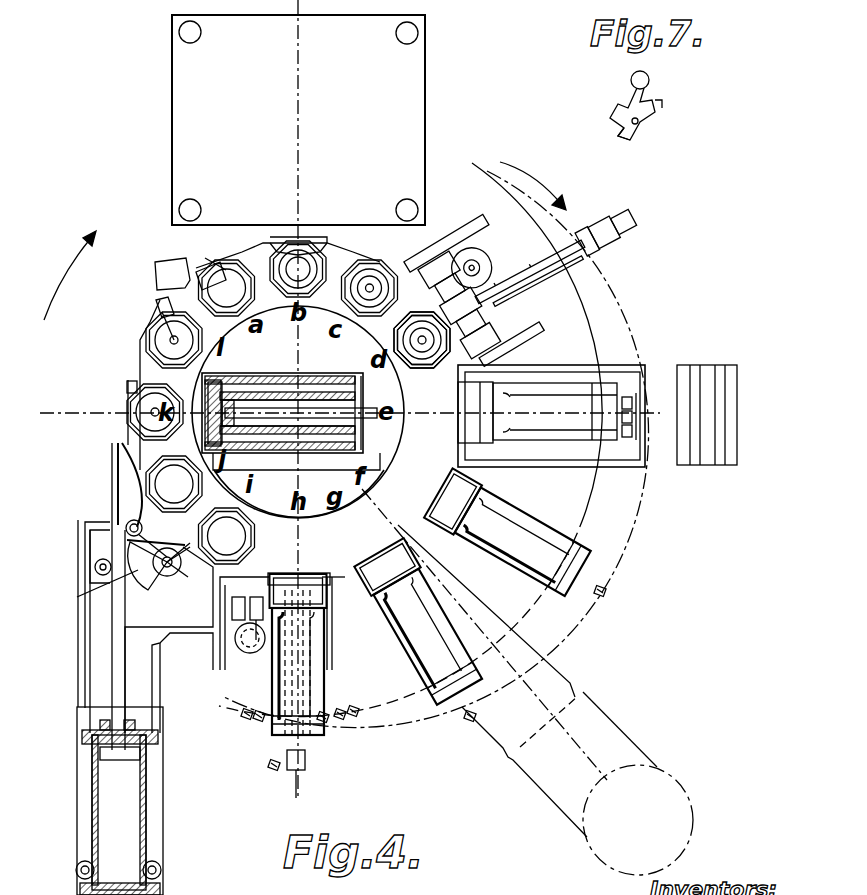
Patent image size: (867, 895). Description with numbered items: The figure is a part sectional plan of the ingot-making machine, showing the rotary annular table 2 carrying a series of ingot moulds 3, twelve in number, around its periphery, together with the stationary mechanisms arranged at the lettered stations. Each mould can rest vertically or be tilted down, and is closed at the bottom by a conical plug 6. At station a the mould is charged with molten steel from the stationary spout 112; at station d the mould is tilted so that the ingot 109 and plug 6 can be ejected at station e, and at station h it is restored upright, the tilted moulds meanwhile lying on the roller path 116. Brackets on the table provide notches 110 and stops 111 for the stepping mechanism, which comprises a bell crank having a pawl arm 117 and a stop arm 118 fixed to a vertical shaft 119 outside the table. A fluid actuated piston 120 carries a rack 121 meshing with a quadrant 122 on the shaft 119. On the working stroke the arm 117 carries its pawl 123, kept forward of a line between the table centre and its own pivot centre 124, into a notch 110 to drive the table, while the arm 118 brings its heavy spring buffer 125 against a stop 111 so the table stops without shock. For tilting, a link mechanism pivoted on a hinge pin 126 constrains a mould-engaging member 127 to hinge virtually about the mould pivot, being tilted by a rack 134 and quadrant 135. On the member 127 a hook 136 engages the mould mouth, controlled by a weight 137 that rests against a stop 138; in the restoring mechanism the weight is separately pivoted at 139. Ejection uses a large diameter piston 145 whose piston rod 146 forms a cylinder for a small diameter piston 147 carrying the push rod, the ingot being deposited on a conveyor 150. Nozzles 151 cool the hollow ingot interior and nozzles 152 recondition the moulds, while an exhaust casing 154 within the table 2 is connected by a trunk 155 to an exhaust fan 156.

In FIG. 4, the rotary annular table 2 is at (508, 533).
In FIG. 4, the ingot mould 3 is at (130, 386).
In FIG. 4, the conical plug 6 is at (655, 416).
In FIG. 4, the ingot 109 is at (300, 262).
In FIG. 4, the notch 110 is at (286, 246).
In FIG. 4, the stop 111 is at (325, 248).
In FIG. 4, the stationary spout 112 is at (182, 275).
In FIG. 4, the roller path 116 is at (348, 716).
In FIG. 4, the bell crank arm 117 is at (130, 550).
In FIG. 4, the stop arm 118 is at (130, 542).
In FIG. 4, the vertical shaft 119 is at (160, 578).
In FIG. 4, the fluid actuated piston 120 is at (122, 755).
In FIG. 4, the rack 121 is at (120, 680).
In FIG. 4, the quadrant 122 is at (100, 587).
In FIG. 4, the pawl 123 is at (116, 463).
In FIG. 4, the pivot centre 124 is at (130, 525).
In FIG. 4, the spring buffer 125 is at (172, 570).
In FIG. 4, the hinge pin 126 is at (540, 312).
In FIG. 4, the mould-engaging member 127 is at (562, 272).
In FIG. 7, the mould-engaging member 127 is at (612, 116).
In FIG. 4, the rack 134 is at (250, 652).
In FIG. 4, the quadrant 135 is at (250, 660).
In FIG. 4, the hook 136 is at (602, 256).
In FIG. 7, the hook 136 is at (628, 106).
In FIG. 4, the weight 137 is at (618, 243).
In FIG. 7, the weight 137 is at (647, 78).
In FIG. 4, the stop 138 is at (625, 228).
In FIG. 7, the stop 138 is at (664, 99).
In FIG. 7, the weight pivot 139 is at (652, 132).
In FIG. 4, the large diameter piston 145 is at (140, 362).
In FIG. 4, the piston rod 146 is at (325, 362).
In FIG. 4, the small diameter piston 147 is at (238, 390).
In FIG. 4, the conveyor 150 is at (722, 464).
In FIG. 4, the nozzle 151 is at (372, 292).
In FIG. 4, the nozzle 152 is at (160, 312).
In FIG. 4, the exhaust casing 154 is at (340, 495).
In FIG. 4, the trunk 155 is at (568, 672).
In FIG. 4, the exhaust fan 156 is at (657, 778).